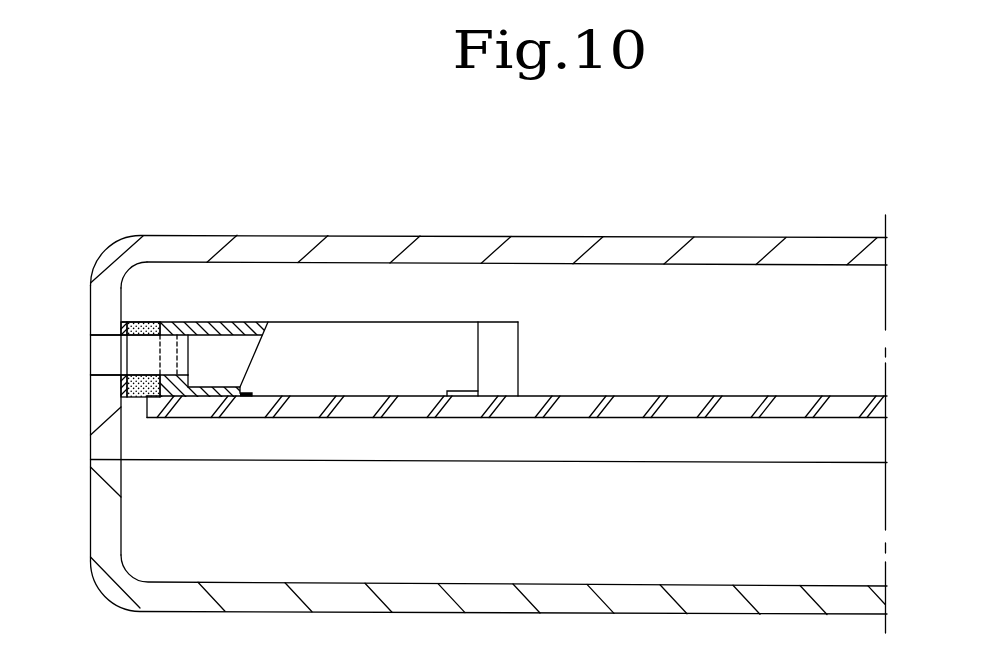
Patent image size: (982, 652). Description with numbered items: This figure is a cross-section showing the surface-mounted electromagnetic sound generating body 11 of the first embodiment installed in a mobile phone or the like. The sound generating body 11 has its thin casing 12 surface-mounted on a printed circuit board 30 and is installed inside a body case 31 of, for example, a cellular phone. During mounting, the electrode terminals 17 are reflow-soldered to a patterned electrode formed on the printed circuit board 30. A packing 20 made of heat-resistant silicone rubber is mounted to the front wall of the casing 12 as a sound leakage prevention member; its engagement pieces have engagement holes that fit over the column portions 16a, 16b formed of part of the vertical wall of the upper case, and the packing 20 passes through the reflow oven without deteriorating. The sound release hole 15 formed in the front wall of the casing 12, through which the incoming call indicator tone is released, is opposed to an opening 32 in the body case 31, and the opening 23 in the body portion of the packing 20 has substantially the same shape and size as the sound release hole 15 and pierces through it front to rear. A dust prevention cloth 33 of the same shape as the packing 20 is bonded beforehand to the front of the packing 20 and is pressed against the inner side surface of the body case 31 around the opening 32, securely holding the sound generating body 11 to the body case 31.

The surface-mounted electromagnetic sound generating body 11 is at (455, 289).
The casing 12 is at (412, 318).
The sound release hole 15 is at (190, 357).
The column portion 16a is at (172, 343).
The column portion 16b is at (241, 283).
The electrode terminal 17 is at (455, 391).
The packing 20 is at (147, 318).
The opening 23 is at (135, 347).
The printed circuit board 30 is at (747, 395).
The body case 31 is at (716, 238).
The opening 32 is at (102, 364).
The dust prevention cloth 33 is at (122, 385).